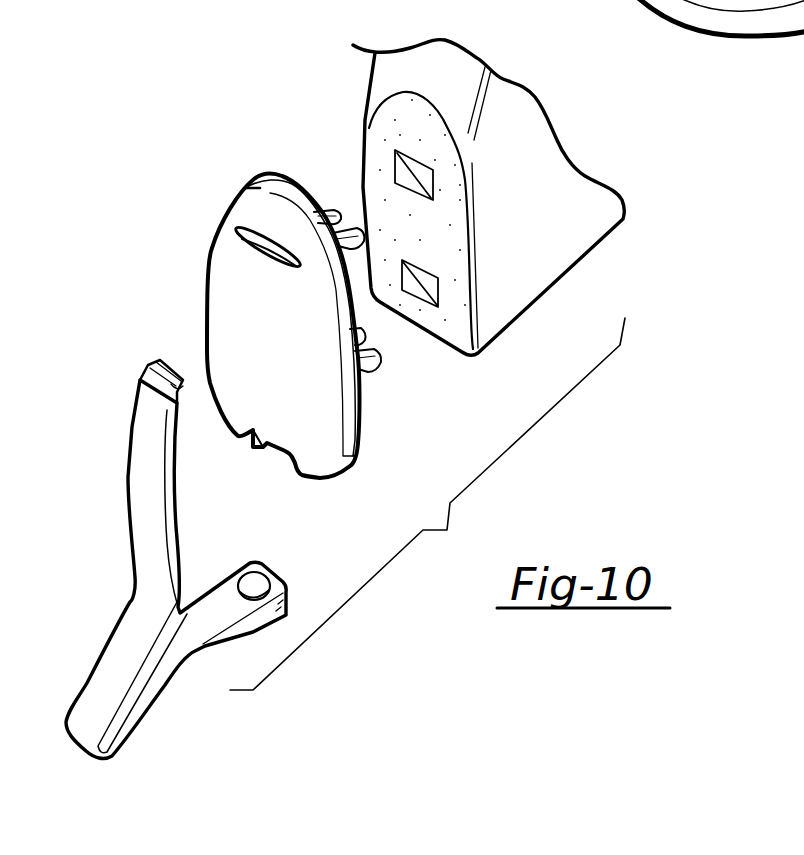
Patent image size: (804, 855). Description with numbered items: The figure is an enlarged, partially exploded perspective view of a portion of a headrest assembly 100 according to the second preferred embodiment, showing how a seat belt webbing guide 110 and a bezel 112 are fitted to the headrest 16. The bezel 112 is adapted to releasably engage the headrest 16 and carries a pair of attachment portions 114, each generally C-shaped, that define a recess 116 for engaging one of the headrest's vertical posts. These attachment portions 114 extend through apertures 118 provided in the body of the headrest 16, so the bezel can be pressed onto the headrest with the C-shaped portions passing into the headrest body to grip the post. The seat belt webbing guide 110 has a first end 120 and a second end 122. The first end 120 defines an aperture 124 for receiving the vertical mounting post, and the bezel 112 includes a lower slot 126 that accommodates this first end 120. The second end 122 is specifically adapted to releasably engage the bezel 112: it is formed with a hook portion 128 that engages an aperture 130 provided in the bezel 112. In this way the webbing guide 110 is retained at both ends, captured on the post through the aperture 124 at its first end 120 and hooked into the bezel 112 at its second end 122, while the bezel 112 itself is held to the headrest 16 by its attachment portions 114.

The headrest 16 is at (503, 201).
The headrest assembly 100 is at (180, 209).
The seat belt webbing guide 110 is at (189, 537).
The bezel 112 is at (285, 324).
The attachment portions 114 is at (330, 210).
The recess 116 is at (340, 216).
The apertures 118 is at (430, 193).
The first end 120 is at (280, 627).
The second end 122 is at (140, 380).
The aperture 124 is at (246, 578).
The lower slot 126 is at (290, 455).
The hook portion 128 is at (148, 362).
The aperture 130 is at (253, 227).